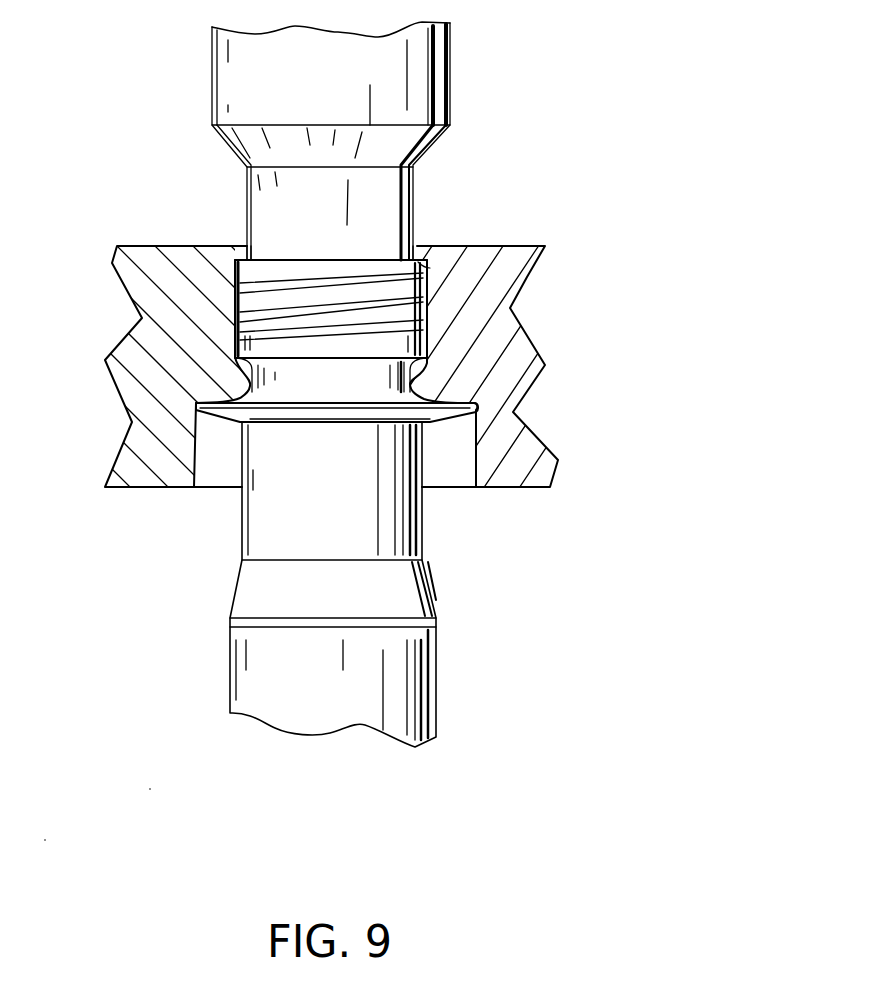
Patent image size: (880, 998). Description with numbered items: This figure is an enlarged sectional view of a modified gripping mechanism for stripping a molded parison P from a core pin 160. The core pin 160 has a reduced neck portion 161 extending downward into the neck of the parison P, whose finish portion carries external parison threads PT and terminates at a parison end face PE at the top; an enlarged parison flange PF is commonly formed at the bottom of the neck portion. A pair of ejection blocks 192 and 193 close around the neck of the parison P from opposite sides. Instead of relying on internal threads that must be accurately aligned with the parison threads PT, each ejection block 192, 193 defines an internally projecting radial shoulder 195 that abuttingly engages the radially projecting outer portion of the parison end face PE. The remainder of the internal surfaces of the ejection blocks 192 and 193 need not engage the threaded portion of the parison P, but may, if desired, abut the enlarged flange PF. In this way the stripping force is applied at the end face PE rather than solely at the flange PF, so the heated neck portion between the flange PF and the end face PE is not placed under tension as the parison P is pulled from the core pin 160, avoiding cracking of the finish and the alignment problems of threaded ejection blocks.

The core pin 160 is at (385, 68).
The core pin neck portion 161 is at (415, 175).
The ejection block 192 is at (138, 280).
The ejection block 193 is at (523, 273).
The radial shoulder 195 is at (428, 267).
The parison end face PE is at (243, 260).
The parison threads PT is at (390, 308).
The parison flange PF is at (440, 400).
The parison P is at (394, 460).